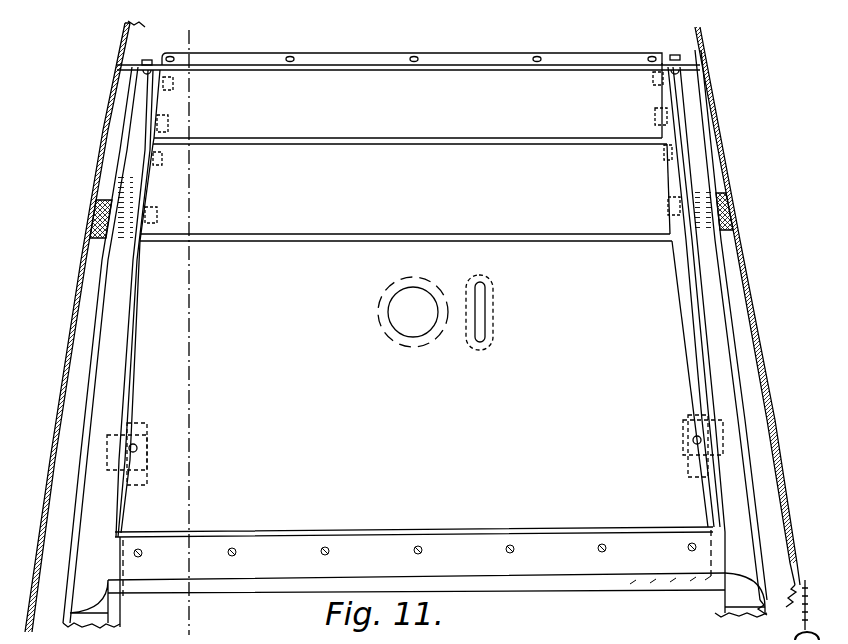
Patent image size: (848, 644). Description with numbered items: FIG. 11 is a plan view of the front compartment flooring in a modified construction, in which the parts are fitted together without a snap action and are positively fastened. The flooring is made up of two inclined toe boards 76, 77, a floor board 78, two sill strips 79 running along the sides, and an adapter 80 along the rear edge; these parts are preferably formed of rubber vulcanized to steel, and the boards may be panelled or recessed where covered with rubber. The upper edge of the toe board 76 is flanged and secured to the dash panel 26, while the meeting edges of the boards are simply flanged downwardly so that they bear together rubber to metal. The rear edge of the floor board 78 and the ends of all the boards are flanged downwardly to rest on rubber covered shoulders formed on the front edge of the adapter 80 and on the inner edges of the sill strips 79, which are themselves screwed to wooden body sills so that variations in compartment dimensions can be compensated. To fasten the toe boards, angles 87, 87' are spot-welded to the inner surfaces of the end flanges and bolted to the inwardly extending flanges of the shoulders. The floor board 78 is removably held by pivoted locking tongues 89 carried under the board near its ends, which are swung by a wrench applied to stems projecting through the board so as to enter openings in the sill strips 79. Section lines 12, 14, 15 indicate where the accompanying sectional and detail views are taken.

The section line 12 is at (187, 337).
The section line 14 is at (723, 143).
The section line 15 is at (745, 384).
The dash panel 26 is at (608, 67).
The toe board 76 is at (410, 118).
The toe board 77 is at (406, 209).
The floor board 78 is at (414, 406).
The sill strip 79 is at (122, 333).
The adapter 80 is at (471, 545).
The angle 87 is at (416, 144).
The angle 87' is at (165, 216).
The locking tongue 89 is at (140, 447).